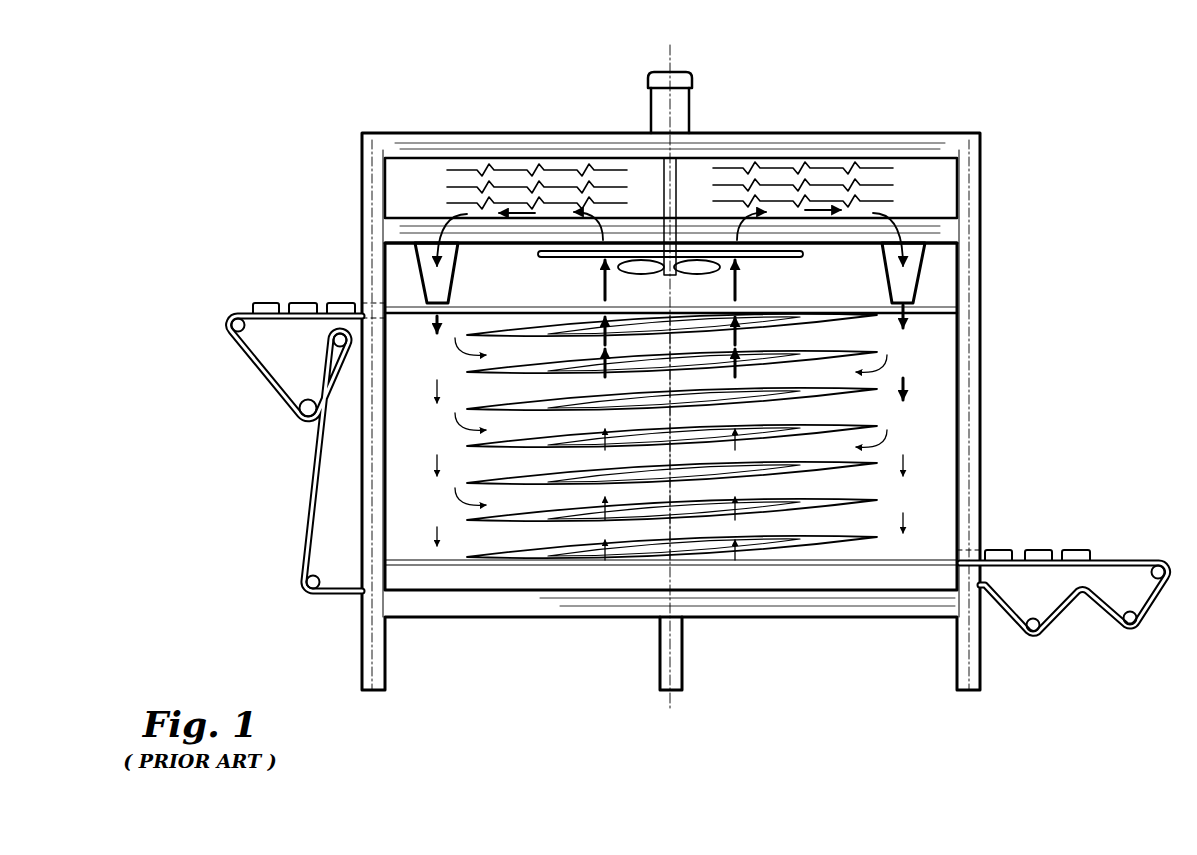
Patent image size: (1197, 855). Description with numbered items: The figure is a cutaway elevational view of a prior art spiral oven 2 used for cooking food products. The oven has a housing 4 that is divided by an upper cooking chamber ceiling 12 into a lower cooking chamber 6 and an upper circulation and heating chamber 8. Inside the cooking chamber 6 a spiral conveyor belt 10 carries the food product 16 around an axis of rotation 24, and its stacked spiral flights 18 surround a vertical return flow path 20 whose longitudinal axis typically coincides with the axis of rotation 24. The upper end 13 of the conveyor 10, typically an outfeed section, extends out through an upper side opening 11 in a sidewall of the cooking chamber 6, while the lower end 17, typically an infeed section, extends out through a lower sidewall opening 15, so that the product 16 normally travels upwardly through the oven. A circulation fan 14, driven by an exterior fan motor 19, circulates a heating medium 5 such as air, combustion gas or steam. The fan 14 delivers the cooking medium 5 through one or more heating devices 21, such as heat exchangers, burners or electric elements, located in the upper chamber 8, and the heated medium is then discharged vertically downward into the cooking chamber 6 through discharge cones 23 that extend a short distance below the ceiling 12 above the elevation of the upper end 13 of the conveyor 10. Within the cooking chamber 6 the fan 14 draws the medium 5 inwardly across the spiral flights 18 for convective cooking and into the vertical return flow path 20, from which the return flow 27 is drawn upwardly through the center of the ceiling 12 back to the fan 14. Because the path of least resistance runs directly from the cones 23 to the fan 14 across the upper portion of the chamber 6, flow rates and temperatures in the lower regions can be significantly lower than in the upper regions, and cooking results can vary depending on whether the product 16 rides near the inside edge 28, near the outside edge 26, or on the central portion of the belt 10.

The spiral oven 2 is at (985, 115).
The housing 4 is at (968, 452).
The heating medium 5 is at (436, 396).
The lower cooking chamber 6 is at (925, 318).
The upper circulation and heating chamber 8 is at (825, 168).
The spiral conveyor belt 10 is at (645, 550).
The upper side opening 11 is at (372, 300).
The upper cooking chamber ceiling 12 is at (405, 243).
The upper end of the conveyor 13 is at (265, 312).
The circulation fan 14 is at (683, 274).
The lower sidewall opening 15 is at (975, 535).
The food product 16 is at (292, 303).
The lower end of the conveyor 17 is at (1120, 562).
The spiral flights 18 is at (877, 317).
The exterior fan motor 19 is at (695, 74).
The vertical return flow path 20 is at (690, 500).
The heating device 21 is at (557, 163).
The discharge cones 23 is at (450, 272).
The axis of rotation 24 is at (655, 59).
The outside edge 26 is at (455, 337).
The cooking medium return flow 27 is at (610, 282).
The inside edge 28 is at (667, 465).